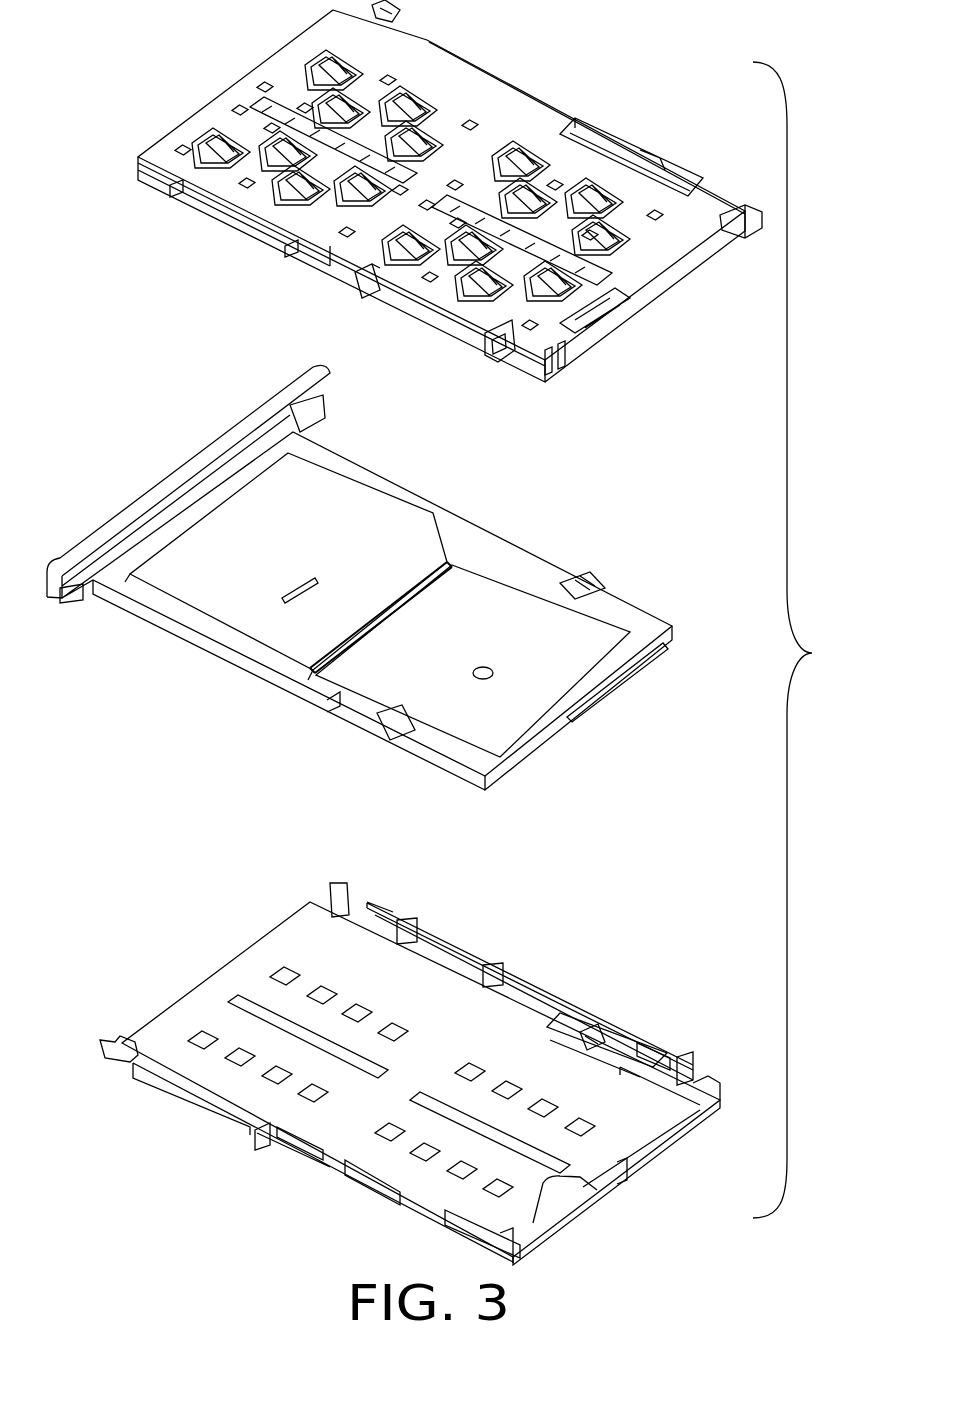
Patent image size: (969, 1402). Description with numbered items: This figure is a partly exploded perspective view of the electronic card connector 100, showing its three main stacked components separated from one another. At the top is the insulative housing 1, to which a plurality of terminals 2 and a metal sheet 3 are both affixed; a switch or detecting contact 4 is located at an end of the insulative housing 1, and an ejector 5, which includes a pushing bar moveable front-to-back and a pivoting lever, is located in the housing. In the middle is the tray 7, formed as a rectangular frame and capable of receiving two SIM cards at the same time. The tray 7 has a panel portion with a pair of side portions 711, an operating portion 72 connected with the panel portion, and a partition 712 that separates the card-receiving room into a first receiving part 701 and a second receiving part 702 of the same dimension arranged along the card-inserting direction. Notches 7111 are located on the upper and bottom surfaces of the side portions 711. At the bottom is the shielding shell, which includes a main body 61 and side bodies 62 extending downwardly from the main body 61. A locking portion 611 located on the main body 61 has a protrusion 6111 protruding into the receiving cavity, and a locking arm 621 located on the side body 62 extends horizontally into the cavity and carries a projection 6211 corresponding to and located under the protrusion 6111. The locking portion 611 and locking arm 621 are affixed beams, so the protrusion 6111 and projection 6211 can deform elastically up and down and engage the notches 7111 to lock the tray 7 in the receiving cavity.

The electronic card connector 100 is at (811, 640).
The insulative housing 1 is at (438, 82).
The terminals 2 is at (502, 143).
The metal sheet 3 is at (238, 222).
The detecting contact 4 is at (595, 307).
The ejector 5 is at (607, 140).
The tray 7 is at (191, 433).
The operating portion 72 is at (153, 503).
The side portions 711 is at (260, 655).
The first receiving part 701 is at (297, 633).
The second receiving part 702 is at (392, 668).
The partition 712 is at (397, 600).
The notches 7111 is at (580, 580).
The main body 61 is at (447, 993).
The side bodies 62 is at (430, 935).
The locking arm 621 is at (563, 1017).
The projection 6211 is at (587, 1037).
The locking portion 611 is at (620, 1067).
The protrusion 6111 is at (593, 1053).